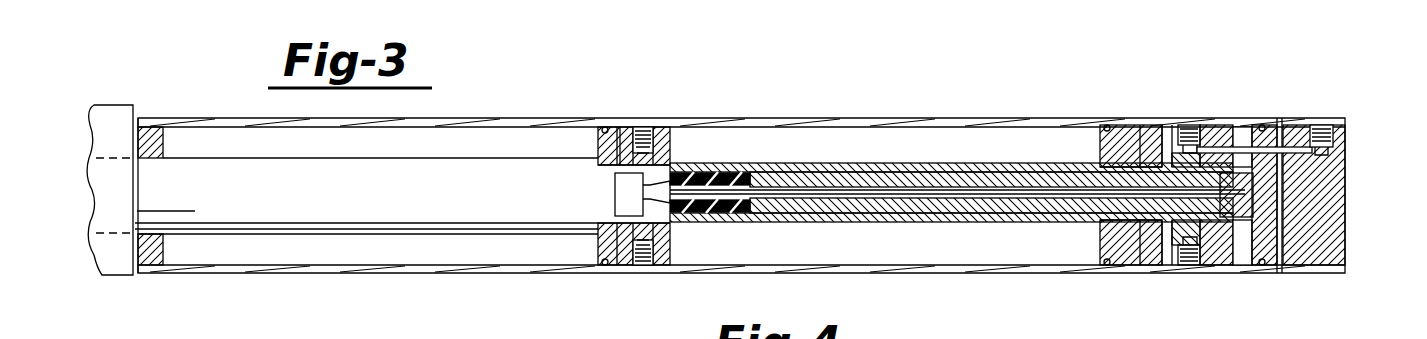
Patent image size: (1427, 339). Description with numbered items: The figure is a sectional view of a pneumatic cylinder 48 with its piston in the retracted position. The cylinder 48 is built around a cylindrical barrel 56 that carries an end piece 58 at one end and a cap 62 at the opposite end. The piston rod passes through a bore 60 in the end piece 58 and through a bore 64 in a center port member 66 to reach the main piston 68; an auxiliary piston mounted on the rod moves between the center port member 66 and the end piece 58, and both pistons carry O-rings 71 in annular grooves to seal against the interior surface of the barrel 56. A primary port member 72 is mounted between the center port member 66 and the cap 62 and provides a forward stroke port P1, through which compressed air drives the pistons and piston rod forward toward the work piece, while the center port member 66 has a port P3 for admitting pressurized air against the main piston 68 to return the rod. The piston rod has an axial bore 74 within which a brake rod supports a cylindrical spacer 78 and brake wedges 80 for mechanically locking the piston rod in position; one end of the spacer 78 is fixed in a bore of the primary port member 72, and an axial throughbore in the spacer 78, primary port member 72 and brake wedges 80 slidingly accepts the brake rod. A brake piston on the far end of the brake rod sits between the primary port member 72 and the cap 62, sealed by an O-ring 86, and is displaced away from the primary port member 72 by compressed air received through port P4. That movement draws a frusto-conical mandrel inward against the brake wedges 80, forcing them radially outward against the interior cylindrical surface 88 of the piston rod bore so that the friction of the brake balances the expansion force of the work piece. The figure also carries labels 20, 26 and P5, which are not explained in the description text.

The piston 20 is at (602, 143).
The inner tube 26 is at (896, 194).
The pneumatic cylinder 48 is at (870, 100).
The cylindrical barrel 56 is at (993, 118).
The end piece 58 is at (150, 127).
The bore 60 is at (150, 160).
The cap 62 is at (1337, 195).
The bore 64 is at (612, 192).
The center port member 66 is at (620, 127).
The main piston 68 is at (1132, 130).
The O-rings 71 is at (606, 126).
The primary port member 72 is at (1217, 130).
The axial bore 74 is at (596, 233).
The cylindrical spacer 78 is at (922, 178).
The brake wedges 80 is at (718, 183).
The O-ring 86 is at (1262, 125).
The interior cylindrical surface 88 is at (683, 172).
The forward stroke port P1 is at (1188, 268).
The port P3 is at (643, 120).
The port P4 is at (1189, 120).
The port P5 is at (1323, 120).